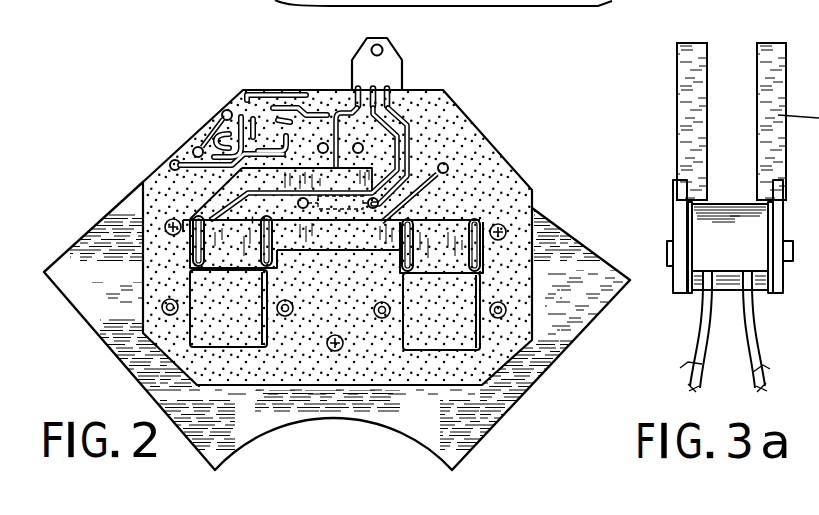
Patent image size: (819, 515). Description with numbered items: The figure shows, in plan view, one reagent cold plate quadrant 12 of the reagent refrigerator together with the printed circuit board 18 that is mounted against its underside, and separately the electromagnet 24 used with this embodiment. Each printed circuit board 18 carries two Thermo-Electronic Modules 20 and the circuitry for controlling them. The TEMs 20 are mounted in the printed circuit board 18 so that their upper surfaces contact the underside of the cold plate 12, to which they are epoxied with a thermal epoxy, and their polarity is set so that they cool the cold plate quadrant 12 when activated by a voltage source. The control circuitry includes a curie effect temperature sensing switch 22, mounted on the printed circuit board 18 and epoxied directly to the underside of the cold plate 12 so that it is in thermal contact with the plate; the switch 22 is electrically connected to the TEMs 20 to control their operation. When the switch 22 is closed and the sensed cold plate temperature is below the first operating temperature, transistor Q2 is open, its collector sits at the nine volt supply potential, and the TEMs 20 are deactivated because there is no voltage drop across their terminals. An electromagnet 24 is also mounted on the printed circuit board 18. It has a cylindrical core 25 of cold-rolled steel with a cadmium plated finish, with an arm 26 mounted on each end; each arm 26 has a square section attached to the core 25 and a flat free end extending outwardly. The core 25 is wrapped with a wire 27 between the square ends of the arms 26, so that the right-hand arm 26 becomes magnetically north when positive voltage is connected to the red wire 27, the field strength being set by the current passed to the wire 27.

In FIG. 2, the cold plate quadrant 12 is at (570, 243).
In FIG. 2, the printed circuit board 18 is at (497, 153).
In FIG. 2, the transistor Q2 is at (383, 70).
In FIG. 2, the Thermo-Electronic Module 20 is at (247, 318).
In FIG. 2, the curie effect temperature sensing switch 22 is at (343, 223).
In FIG. 3a, the electromagnet 24 is at (710, 110).
In FIG. 3a, the core 25 is at (729, 201).
In FIG. 3a, the arm 26 is at (676, 110).
In FIG. 3a, the wire 27 is at (703, 327).